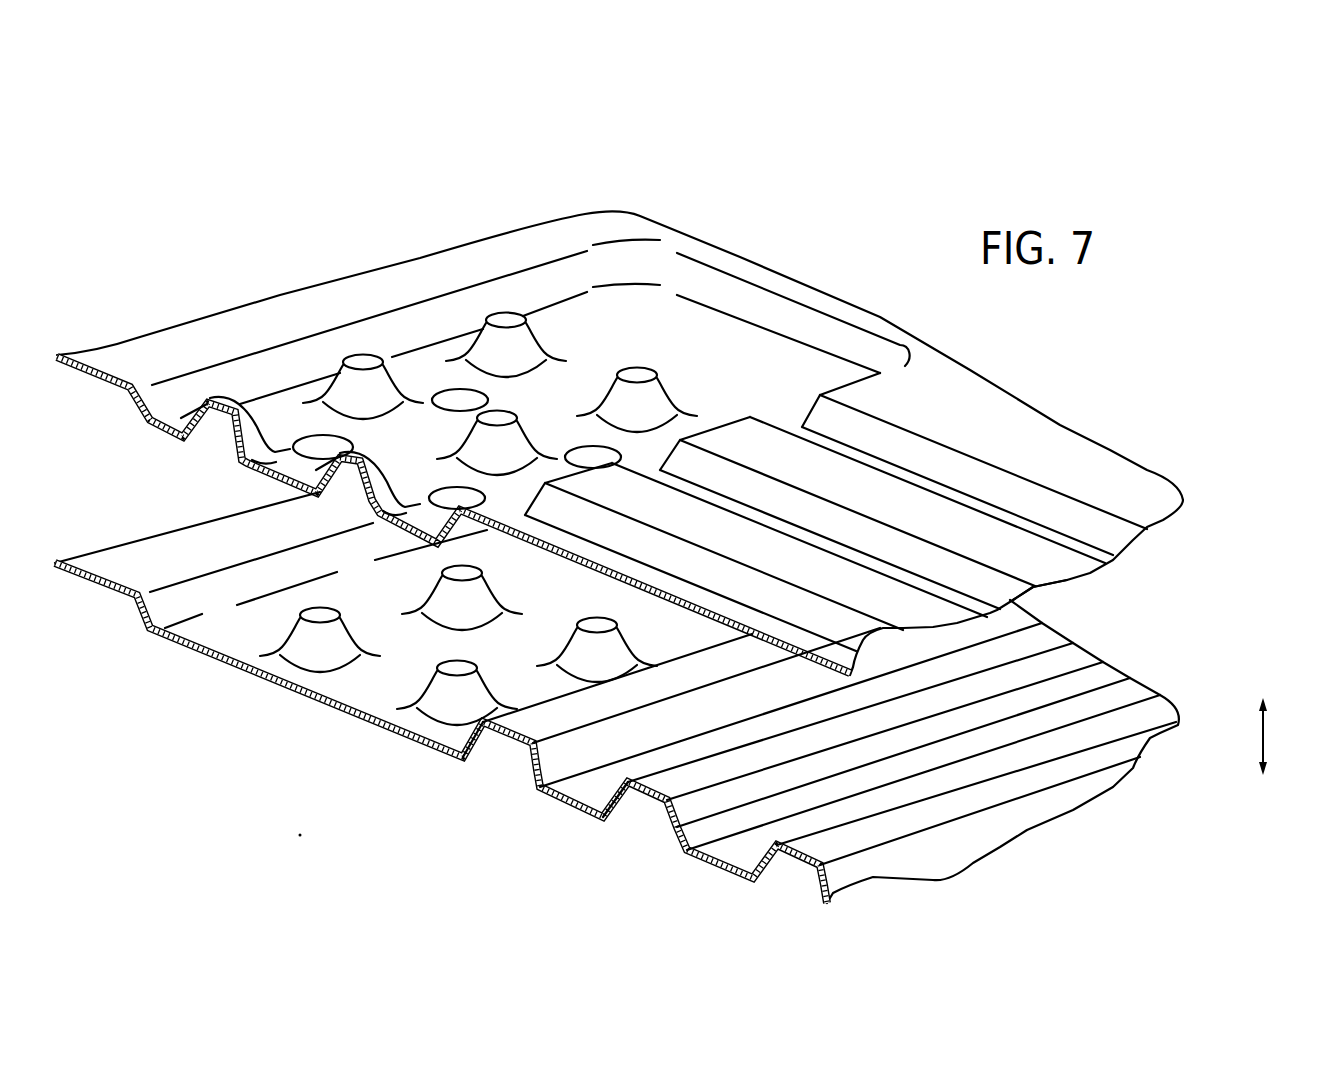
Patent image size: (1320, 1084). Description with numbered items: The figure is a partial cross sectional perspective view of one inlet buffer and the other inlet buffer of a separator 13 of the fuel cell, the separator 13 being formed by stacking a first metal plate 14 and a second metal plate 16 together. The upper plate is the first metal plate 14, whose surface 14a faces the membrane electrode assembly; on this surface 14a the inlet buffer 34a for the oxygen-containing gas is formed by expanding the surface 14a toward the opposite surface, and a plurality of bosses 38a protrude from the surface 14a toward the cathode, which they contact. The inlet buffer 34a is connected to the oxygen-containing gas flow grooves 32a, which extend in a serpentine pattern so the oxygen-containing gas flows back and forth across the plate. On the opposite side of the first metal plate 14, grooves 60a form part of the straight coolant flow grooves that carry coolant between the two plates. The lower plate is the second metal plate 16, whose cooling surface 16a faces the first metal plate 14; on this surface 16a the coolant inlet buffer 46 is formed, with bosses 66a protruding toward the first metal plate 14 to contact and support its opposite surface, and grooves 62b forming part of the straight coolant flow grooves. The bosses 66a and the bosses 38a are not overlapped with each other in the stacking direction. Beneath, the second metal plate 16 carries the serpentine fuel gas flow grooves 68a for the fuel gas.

The separator 13 is at (1240, 311).
The first metal plate 14 is at (1140, 500).
The surface 14a is at (1053, 443).
The second metal plate 16 is at (1113, 789).
The surface 16a is at (847, 837).
The oxygen-containing gas flow grooves 32a is at (913, 463).
The inlet buffer 34a is at (656, 275).
The bosses 38a is at (520, 434).
The inlet buffer 46 is at (223, 590).
The grooves 60a is at (1030, 597).
The grooves 62b is at (723, 850).
The bosses 66a is at (300, 636).
The fuel gas flow grooves 68a is at (508, 757).